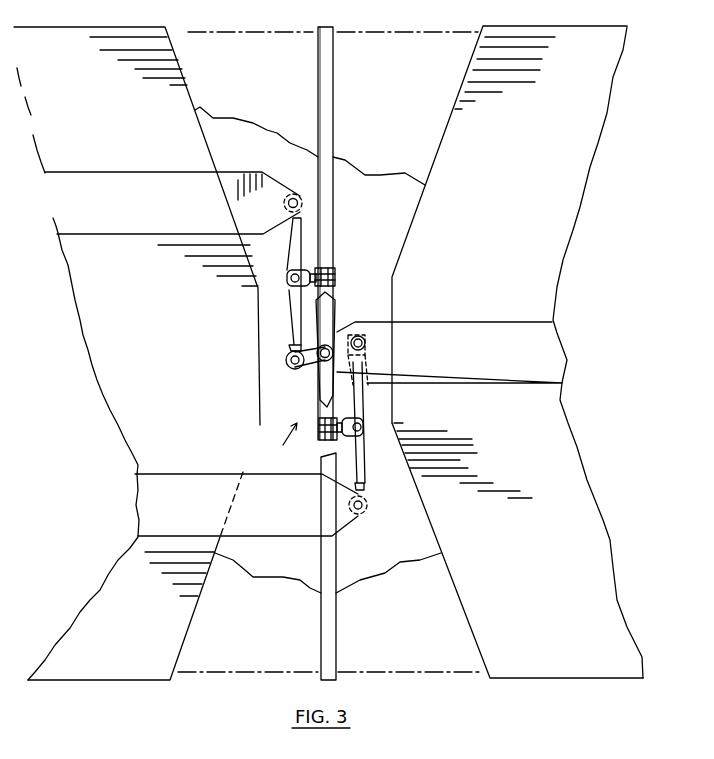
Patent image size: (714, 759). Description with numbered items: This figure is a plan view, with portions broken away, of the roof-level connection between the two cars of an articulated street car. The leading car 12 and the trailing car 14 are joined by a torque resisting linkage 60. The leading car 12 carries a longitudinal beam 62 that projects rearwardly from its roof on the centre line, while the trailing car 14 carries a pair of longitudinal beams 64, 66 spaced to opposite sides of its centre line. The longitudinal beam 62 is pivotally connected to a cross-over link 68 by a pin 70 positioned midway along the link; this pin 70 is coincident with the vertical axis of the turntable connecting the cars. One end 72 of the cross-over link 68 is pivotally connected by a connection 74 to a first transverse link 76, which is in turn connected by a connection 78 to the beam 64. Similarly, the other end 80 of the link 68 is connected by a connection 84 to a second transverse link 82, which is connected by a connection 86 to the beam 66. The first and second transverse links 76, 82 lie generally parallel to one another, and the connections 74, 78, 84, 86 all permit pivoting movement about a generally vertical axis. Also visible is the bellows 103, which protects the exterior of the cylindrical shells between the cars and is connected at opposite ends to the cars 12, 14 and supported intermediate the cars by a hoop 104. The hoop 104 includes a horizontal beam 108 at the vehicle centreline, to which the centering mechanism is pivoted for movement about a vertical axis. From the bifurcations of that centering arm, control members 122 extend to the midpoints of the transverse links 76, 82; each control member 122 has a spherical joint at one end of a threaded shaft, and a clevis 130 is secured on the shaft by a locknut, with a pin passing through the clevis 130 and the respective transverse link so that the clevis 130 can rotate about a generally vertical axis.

The leading car 12 is at (517, 352).
The trailing car 14 is at (124, 608).
The torque resisting linkage 60 is at (281, 446).
The longitudinal beam 62 is at (482, 224).
The longitudinal beam 64 is at (157, 250).
The longitudinal beam 66 is at (246, 504).
The cross-over link 68 is at (305, 382).
The pin 70 is at (330, 345).
The end of the link 72 is at (293, 350).
The connection 74 is at (296, 370).
The first transverse link 76 is at (288, 256).
The connection 78 is at (284, 203).
The other end of the link 80 is at (366, 352).
The second transverse link 82 is at (364, 477).
The connection 84 is at (366, 343).
The connection 86 is at (364, 512).
The bellows 103 is at (368, 566).
The hoop 104 is at (333, 100).
The horizontal beam 108 is at (333, 137).
The control members 122 is at (337, 252).
The clevis 130 is at (290, 280).